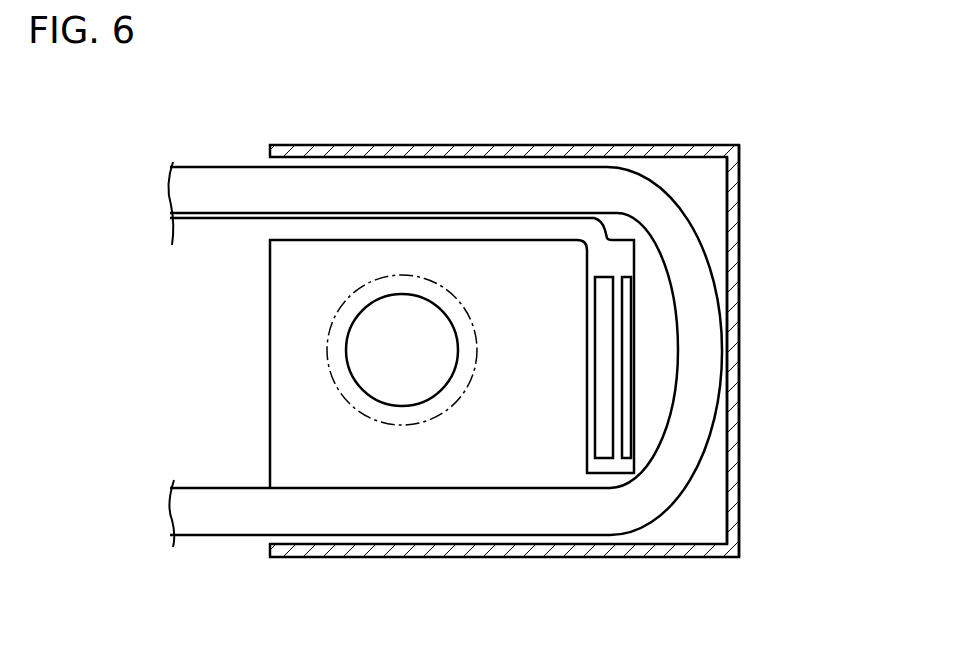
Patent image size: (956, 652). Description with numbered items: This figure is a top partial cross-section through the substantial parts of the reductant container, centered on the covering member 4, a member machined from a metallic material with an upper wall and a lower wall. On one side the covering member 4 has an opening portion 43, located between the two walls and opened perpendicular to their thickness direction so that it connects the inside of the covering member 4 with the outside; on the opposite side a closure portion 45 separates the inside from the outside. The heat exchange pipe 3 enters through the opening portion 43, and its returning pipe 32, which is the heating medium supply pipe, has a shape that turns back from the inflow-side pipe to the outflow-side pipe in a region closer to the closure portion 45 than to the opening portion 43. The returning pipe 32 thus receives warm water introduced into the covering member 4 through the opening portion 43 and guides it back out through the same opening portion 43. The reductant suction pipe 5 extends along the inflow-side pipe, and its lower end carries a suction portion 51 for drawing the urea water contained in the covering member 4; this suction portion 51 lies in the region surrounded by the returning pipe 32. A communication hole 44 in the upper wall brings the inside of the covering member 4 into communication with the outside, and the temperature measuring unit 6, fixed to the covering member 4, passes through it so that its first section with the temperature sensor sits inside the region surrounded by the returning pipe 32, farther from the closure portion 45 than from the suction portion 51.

The heat exchange pipe 3 is at (212, 188).
The covering member 4 is at (690, 152).
The reductant suction pipe 5 is at (296, 231).
The temperature measuring unit 6 is at (366, 303).
The communication hole 44 is at (444, 283).
The returning pipe 32 is at (705, 302).
The suction portion 51 is at (628, 363).
The closure portion 45 is at (739, 437).
The opening portion 43 is at (270, 542).